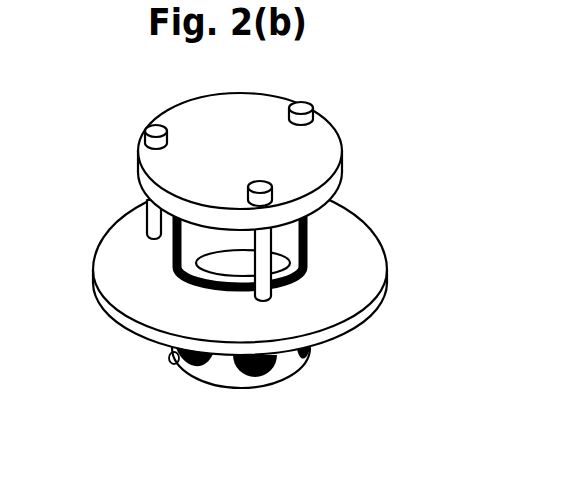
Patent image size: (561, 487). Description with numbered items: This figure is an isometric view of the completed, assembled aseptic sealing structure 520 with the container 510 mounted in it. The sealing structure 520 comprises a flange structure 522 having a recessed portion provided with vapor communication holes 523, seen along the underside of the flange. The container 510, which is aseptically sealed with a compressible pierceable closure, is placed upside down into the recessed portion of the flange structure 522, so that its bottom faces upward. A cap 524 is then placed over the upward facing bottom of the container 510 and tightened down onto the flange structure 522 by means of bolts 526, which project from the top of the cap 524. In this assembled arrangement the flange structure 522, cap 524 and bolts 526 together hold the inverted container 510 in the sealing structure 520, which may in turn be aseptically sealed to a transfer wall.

The container 510 is at (192, 250).
The sealing structure 520 is at (244, 253).
The flange structure 522 is at (313, 310).
The vapor communication holes 523 is at (177, 368).
The cap 524 is at (290, 168).
The bolts 526 is at (153, 132).